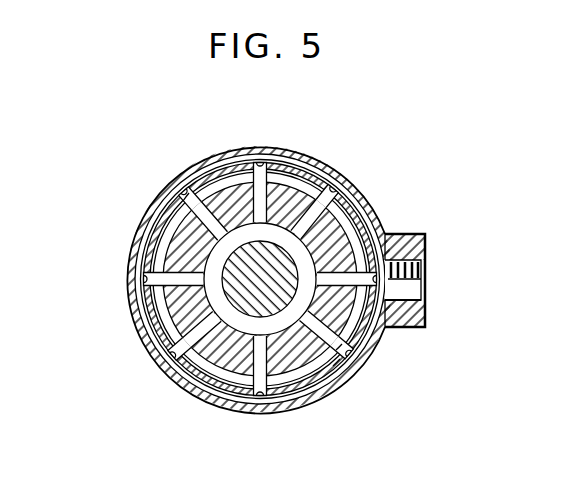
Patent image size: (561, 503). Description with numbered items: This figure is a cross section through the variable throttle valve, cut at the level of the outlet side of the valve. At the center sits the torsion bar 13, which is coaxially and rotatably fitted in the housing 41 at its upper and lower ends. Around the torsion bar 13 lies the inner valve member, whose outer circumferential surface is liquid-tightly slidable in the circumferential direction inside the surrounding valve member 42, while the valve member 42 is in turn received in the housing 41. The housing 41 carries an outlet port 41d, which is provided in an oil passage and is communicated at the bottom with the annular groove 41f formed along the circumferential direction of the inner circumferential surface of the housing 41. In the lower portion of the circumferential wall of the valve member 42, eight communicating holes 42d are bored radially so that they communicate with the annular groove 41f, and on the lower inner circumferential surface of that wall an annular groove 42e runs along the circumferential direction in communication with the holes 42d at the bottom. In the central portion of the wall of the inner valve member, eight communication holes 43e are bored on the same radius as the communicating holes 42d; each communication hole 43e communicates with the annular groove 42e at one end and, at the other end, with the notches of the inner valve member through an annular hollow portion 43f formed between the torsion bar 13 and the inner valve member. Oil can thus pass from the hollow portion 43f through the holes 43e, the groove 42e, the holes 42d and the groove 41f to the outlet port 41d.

The torsion bar 13 is at (247, 302).
The housing 41 is at (365, 192).
The outlet port 41d is at (404, 294).
The annular groove 41f is at (338, 352).
The valve member 42 is at (192, 373).
The communicating holes 42d is at (184, 191).
The annular groove 42e is at (335, 368).
The communication holes 43e is at (205, 199).
The annular hollow portion 43f is at (181, 203).